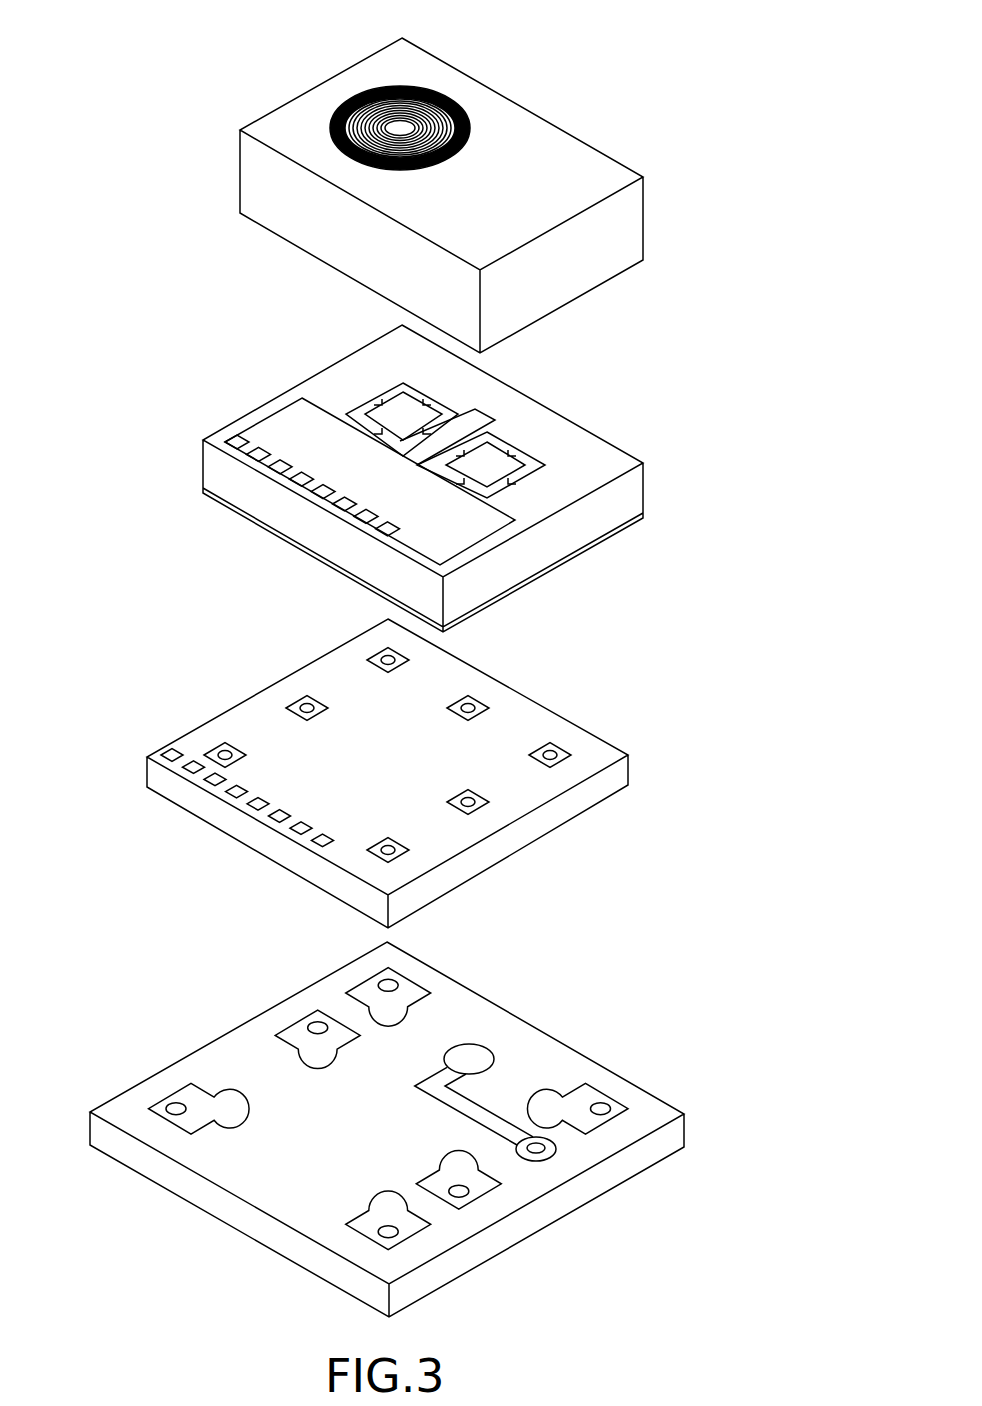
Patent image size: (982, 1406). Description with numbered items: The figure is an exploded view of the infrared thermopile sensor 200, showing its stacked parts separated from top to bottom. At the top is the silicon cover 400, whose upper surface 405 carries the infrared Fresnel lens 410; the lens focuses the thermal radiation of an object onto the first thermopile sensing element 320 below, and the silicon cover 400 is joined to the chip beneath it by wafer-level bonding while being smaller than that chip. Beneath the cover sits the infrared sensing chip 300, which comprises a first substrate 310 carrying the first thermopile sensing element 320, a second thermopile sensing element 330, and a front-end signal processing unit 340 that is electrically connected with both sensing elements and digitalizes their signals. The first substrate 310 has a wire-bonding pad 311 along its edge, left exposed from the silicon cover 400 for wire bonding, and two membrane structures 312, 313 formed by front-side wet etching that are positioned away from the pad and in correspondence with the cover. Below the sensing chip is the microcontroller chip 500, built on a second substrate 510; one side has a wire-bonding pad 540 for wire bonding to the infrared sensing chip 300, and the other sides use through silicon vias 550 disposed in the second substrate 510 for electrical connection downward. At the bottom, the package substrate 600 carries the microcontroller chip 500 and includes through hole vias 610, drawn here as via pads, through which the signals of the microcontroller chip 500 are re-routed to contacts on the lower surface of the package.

The infrared thermopile sensor 200 is at (93, 46).
The infrared sensing chip 300 is at (432, 463).
The first substrate 310 is at (627, 495).
The wire-bonding pad 311 is at (233, 443).
The membrane structure 312 is at (392, 408).
The membrane structure 313 is at (530, 457).
The first thermopile sensing element 320 is at (393, 390).
The second thermopile sensing element 330 is at (492, 453).
The front-end signal processing unit 340 is at (472, 422).
The silicon cover 400 is at (420, 190).
The upper surface 405 is at (551, 143).
The infrared Fresnel lens 410 is at (448, 97).
The microcontroller chip 500 is at (374, 761).
The second substrate 510 is at (497, 693).
The wire-bonding pad 540 is at (172, 753).
The through silicon vias 550 is at (563, 745).
The package substrate 600 is at (410, 1129).
The through hole vias 610 is at (589, 1094).